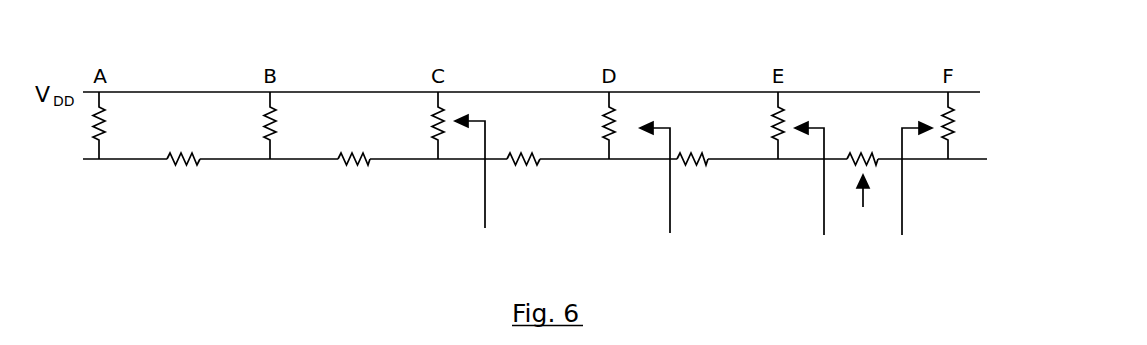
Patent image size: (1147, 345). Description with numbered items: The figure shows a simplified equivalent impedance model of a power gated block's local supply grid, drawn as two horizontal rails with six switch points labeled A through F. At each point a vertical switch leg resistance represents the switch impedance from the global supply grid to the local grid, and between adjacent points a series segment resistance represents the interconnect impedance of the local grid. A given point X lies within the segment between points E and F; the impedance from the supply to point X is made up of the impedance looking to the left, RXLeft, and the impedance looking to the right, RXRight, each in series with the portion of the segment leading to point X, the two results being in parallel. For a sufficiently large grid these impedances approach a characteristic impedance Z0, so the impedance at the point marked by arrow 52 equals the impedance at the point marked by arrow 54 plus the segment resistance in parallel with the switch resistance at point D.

The arrow 54 is at (485, 185).
The arrow 52 is at (670, 183).
The left impedance RXLeft is at (807, 192).
The right impedance RXRight is at (940, 192).
The point X is at (862, 203).